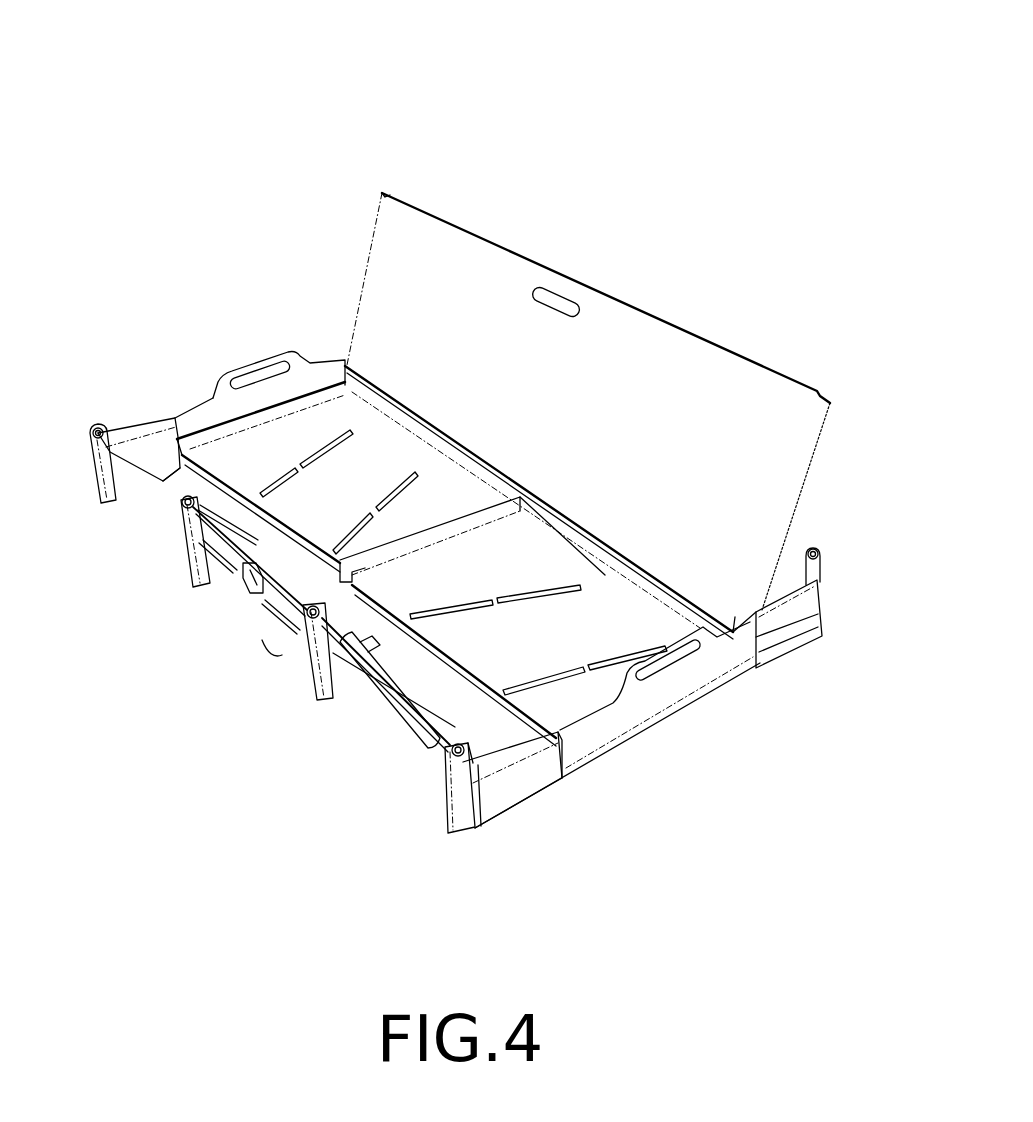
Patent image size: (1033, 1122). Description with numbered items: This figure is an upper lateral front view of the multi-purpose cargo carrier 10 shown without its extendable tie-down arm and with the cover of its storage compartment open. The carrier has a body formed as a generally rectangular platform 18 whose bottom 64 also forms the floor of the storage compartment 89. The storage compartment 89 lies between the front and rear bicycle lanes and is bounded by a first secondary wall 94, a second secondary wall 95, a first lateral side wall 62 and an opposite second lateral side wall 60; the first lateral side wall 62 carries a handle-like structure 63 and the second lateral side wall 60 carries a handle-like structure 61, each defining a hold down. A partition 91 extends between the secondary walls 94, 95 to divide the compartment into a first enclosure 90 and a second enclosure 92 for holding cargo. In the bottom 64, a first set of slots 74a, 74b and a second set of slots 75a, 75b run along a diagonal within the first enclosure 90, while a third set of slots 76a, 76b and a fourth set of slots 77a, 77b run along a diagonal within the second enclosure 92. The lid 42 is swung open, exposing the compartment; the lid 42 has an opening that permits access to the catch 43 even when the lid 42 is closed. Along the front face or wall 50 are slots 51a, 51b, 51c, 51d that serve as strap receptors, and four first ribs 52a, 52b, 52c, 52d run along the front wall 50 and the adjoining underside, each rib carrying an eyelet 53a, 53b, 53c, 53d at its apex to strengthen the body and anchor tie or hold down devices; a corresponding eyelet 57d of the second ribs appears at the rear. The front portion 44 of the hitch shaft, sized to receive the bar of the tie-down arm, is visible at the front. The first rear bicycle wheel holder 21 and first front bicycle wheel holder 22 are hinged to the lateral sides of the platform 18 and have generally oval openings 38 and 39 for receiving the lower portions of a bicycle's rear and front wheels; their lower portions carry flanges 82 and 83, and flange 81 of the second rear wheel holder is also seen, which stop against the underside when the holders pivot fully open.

The multi-purpose cargo carrier 10 is at (150, 110).
The platform 18 is at (735, 683).
The first rear bicycle wheel holder 21 is at (288, 553).
The first front bicycle wheel holder 22 is at (440, 660).
The generally oval opening 38 is at (167, 475).
The generally oval opening 39 is at (463, 700).
The lid 42 is at (710, 398).
The catch 43 is at (553, 290).
The portion of the shaft 44 is at (270, 655).
The front face or wall 50 is at (252, 583).
The slot 51a is at (170, 518).
The slot 51b is at (230, 563).
The slot 51c is at (298, 623).
The slot 51d is at (357, 686).
The first rib 52a is at (95, 467).
The first rib 52b is at (193, 543).
The first rib 52c is at (320, 661).
The first rib 52d is at (458, 795).
The eyelet 53a is at (93, 428).
The eyelet 53b is at (191, 500).
The eyelet 53c is at (319, 612).
The eyelet 53d is at (465, 751).
The eyelet 57d is at (818, 551).
The second lateral side wall 60 is at (217, 410).
The handle-like structure 61 is at (262, 370).
The first lateral side wall 62 is at (633, 720).
The handle-like structure 63 is at (670, 652).
The bottom 64 is at (568, 634).
The slot 74a is at (330, 456).
The slot 74b is at (302, 472).
The slot 75a is at (395, 484).
The slot 75b is at (358, 528).
The slot 76a is at (540, 594).
The slot 76b is at (458, 612).
The slot 77a is at (627, 661).
The slot 77b is at (527, 684).
The flange 81 is at (790, 610).
The flange 82 is at (140, 433).
The flange 83 is at (520, 775).
The storage compartment 89 is at (435, 418).
The first enclosure 90 is at (384, 446).
The partition 91 is at (483, 493).
The second enclosure 92 is at (530, 543).
The first secondary wall 94 is at (510, 711).
The second secondary wall 95 is at (607, 576).